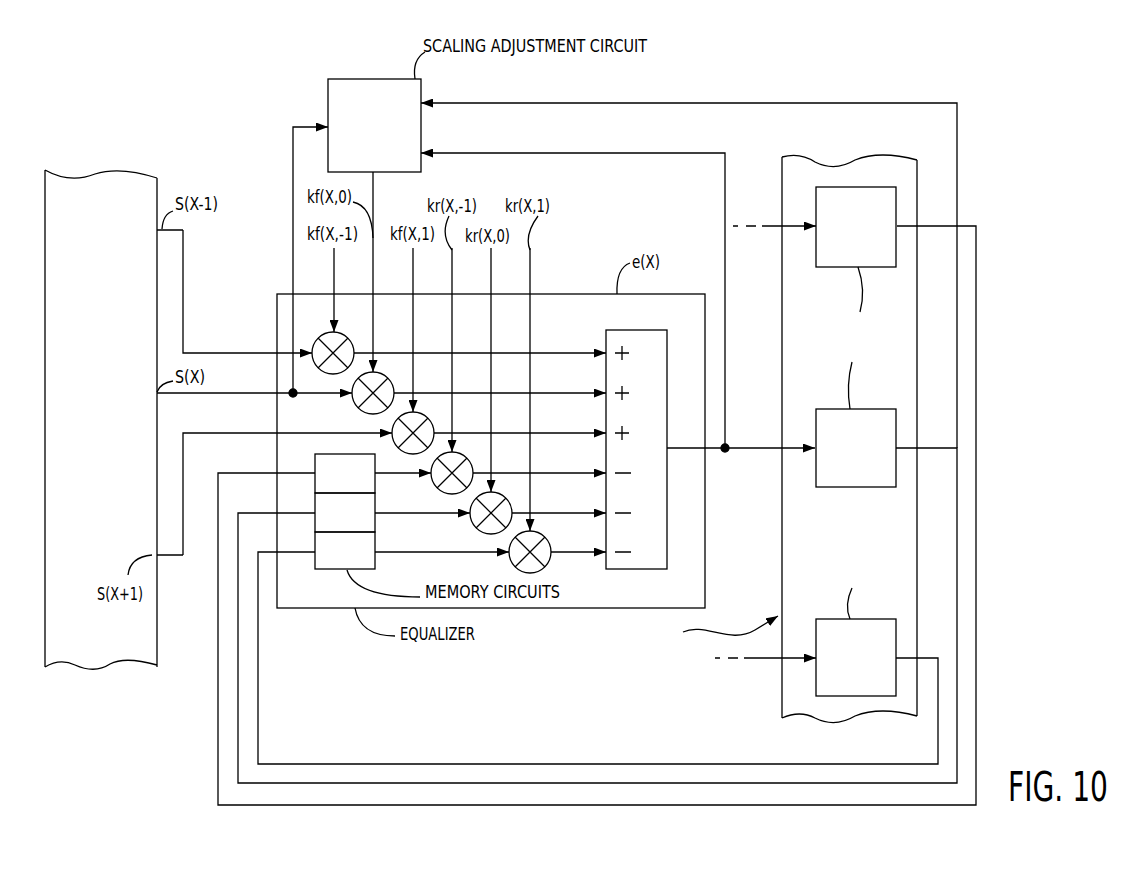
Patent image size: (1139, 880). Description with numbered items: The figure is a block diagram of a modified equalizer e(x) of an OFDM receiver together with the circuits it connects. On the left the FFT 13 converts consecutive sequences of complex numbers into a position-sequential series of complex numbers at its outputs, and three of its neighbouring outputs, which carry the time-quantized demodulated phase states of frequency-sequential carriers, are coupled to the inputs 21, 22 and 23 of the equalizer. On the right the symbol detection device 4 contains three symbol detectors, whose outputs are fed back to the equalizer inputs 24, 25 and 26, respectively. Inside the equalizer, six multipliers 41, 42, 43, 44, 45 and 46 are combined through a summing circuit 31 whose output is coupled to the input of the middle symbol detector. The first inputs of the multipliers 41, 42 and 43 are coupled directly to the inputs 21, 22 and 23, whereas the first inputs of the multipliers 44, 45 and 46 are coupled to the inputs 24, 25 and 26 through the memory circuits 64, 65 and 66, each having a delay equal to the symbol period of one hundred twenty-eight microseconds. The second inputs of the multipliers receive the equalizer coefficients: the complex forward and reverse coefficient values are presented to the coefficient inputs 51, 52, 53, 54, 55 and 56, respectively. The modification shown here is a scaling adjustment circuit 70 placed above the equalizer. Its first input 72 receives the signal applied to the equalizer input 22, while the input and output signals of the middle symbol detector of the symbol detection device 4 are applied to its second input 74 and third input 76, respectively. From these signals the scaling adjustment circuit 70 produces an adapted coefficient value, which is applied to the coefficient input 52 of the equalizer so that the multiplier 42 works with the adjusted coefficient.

The symbol detection device 4 is at (781, 694).
The FFT 13 is at (129, 663).
The input of equalizer 21 is at (277, 352).
The input of equalizer 22 is at (277, 392).
The input of equalizer 23 is at (277, 432).
The input of equalizer 24 is at (277, 472).
The input of equalizer 25 is at (277, 512).
The input of equalizer 26 is at (277, 551).
The summing circuit 31 is at (623, 329).
The multiplier 41 is at (348, 338).
The multiplier 42 is at (388, 380).
The multiplier 43 is at (428, 420).
The multiplier 44 is at (467, 460).
The multiplier 45 is at (506, 500).
The multiplier 46 is at (545, 539).
The input of equalizer 51 is at (336, 293).
The input of equalizer 52 is at (375, 293).
The input of equalizer 53 is at (415, 293).
The input of equalizer 54 is at (454, 293).
The input of equalizer 55 is at (493, 293).
The input of equalizer 56 is at (532, 293).
The memory circuit 64 is at (376, 486).
The memory circuit 65 is at (376, 526).
The memory circuit 66 is at (376, 564).
The scaling adjustment circuit 70 is at (370, 79).
The first input of scaling adjustment circuit 72 is at (324, 122).
The second input of scaling adjustment circuit 74 is at (424, 152).
The third input of scaling adjustment circuit 76 is at (424, 101).